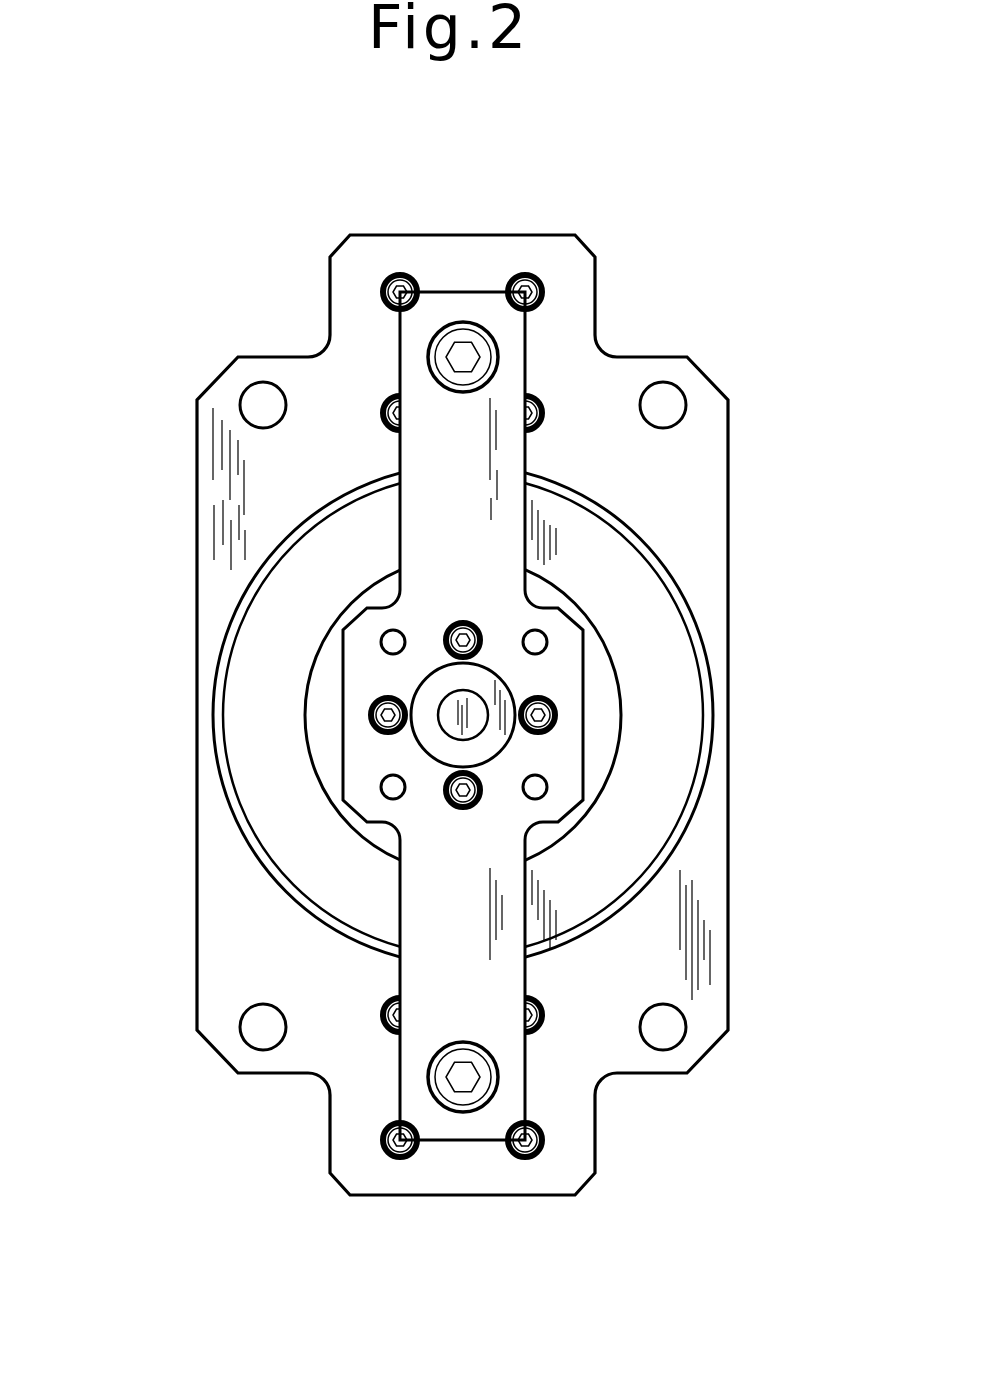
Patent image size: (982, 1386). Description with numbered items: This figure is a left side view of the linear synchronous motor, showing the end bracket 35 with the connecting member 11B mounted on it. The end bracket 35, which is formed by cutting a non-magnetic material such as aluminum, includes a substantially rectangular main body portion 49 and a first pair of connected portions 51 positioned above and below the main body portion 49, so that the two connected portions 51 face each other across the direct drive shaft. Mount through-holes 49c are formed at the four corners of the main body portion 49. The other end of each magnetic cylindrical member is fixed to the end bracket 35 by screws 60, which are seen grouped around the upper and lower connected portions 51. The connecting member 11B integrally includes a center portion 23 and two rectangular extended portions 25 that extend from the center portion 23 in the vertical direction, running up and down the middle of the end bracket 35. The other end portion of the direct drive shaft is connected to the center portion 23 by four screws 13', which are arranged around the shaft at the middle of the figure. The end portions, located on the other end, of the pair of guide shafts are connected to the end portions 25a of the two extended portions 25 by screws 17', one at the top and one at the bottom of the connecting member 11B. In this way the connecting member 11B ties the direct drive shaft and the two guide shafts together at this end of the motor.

The end bracket 35 is at (194, 383).
The main body portion 49 is at (230, 530).
The mount through-holes 49c is at (258, 393).
The connected portions 51 is at (377, 263).
The screws 60 is at (385, 282).
The extended portions 25 is at (410, 373).
The end portions 25a is at (443, 305).
The connecting member 11B is at (396, 455).
The center portion 23 is at (368, 748).
The screws 17' is at (490, 714).
The screws 13' is at (443, 663).